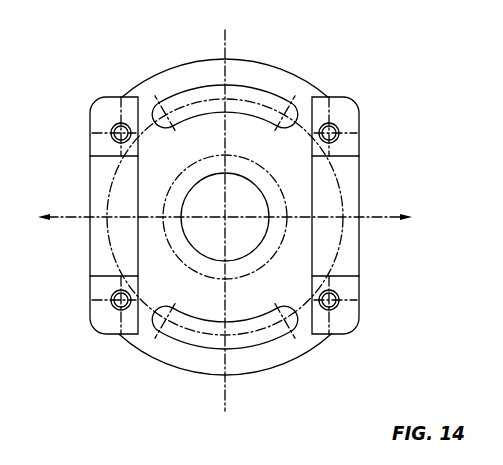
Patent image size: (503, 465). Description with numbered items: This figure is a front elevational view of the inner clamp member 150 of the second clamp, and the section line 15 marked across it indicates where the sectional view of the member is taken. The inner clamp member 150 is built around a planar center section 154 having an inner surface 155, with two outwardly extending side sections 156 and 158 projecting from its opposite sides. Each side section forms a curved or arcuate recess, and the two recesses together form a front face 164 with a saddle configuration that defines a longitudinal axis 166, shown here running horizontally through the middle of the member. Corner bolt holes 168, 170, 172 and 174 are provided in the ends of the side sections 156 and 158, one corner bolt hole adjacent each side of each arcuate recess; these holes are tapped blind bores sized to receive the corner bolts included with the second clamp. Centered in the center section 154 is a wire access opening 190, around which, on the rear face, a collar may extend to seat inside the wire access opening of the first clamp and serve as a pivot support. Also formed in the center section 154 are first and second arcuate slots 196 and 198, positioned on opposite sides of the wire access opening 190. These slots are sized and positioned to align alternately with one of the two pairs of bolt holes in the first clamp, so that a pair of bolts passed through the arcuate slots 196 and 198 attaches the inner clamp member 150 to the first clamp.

The section line 15- 15 is at (225, 411).
The inner clamp member 150 is at (299, 72).
The planar center section 154 is at (297, 180).
The inner surface 155 is at (155, 338).
The side section 156 is at (349, 264).
The side section 158 is at (100, 265).
The front face 164 is at (349, 192).
The longitudinal axis 166 is at (61, 214).
The corner bolt hole 168 is at (333, 125).
The corner bolt hole 170 is at (334, 307).
The corner bolt hole 172 is at (116, 128).
The corner bolt hole 174 is at (113, 305).
The wire access opening 190 is at (243, 240).
The first arcuate slot 196 is at (245, 92).
The second arcuate slot 198 is at (200, 333).